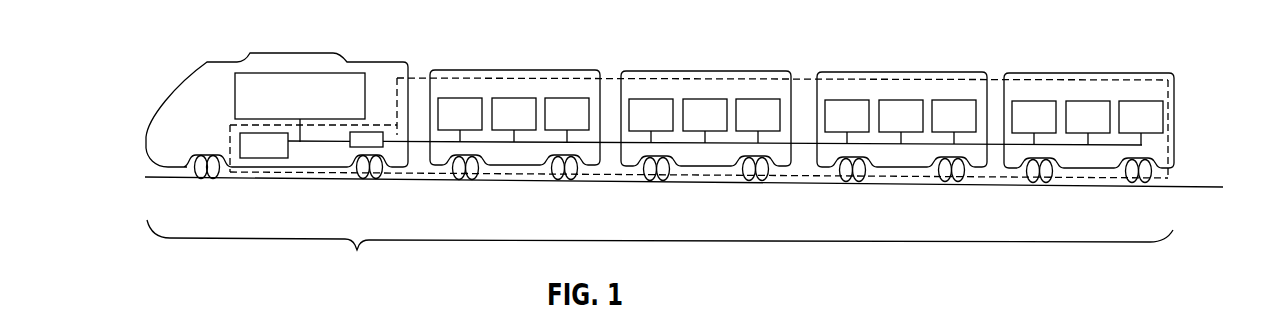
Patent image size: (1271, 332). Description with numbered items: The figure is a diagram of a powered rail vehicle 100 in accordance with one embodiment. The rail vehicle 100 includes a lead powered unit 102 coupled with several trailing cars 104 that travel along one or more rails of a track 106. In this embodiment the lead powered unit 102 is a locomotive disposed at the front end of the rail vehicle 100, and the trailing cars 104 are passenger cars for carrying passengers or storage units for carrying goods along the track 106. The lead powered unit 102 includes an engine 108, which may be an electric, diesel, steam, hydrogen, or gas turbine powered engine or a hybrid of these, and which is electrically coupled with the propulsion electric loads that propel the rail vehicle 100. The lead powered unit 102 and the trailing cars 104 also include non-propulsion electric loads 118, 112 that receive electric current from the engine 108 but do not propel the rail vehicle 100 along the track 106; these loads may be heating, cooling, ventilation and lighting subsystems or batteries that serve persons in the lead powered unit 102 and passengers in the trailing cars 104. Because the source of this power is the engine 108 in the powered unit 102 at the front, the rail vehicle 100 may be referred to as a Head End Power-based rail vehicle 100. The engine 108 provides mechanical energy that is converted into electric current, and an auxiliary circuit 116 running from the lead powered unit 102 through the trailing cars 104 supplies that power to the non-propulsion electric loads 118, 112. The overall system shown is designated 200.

The powered rail vehicle 100 is at (660, 254).
The lead powered unit 102 is at (407, 64).
The trailing cars 104 is at (821, 100).
The track 106 is at (1194, 185).
The engine 108 is at (249, 73).
The non-propulsion electric loads 112 is at (756, 127).
The auxiliary circuit 116 is at (397, 88).
The non-propulsion electric loads 118 is at (230, 162).
The system reference 200 is at (927, 327).